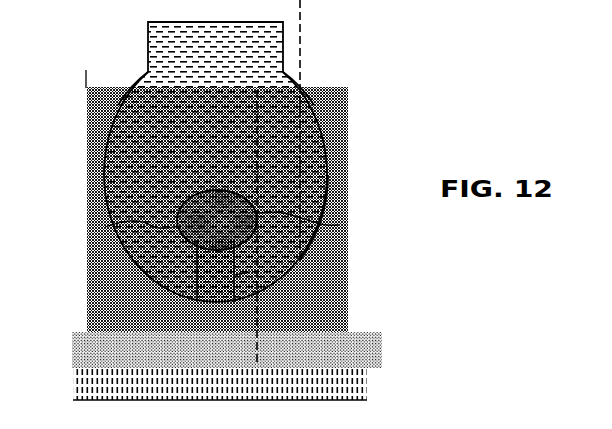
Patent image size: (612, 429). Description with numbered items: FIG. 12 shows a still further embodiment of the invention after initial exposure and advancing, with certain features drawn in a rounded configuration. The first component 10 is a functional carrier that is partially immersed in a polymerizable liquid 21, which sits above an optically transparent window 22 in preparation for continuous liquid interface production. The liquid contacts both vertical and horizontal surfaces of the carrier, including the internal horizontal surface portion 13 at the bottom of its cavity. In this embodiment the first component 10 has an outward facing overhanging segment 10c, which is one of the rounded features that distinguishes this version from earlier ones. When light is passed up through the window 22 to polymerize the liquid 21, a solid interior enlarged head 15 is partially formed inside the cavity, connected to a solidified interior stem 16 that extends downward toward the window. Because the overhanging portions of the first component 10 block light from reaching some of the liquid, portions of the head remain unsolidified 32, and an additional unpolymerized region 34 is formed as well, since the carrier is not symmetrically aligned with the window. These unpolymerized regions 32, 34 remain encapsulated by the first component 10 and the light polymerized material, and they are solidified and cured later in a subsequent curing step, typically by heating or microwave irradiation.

The first component 10 is at (215, 162).
The outward facing overhanging segment 10c is at (312, 180).
The internal horizontal surface portion 13 is at (282, 299).
The interior enlarged head 15 is at (217, 220).
The interior stem 16 is at (215, 271).
The polymerizable liquid 21 is at (227, 350).
The optically transparent window 22 is at (220, 384).
The unsolidified portion of liquid head 32 is at (105, 227).
The additional unpolymerized region 34 is at (112, 100).